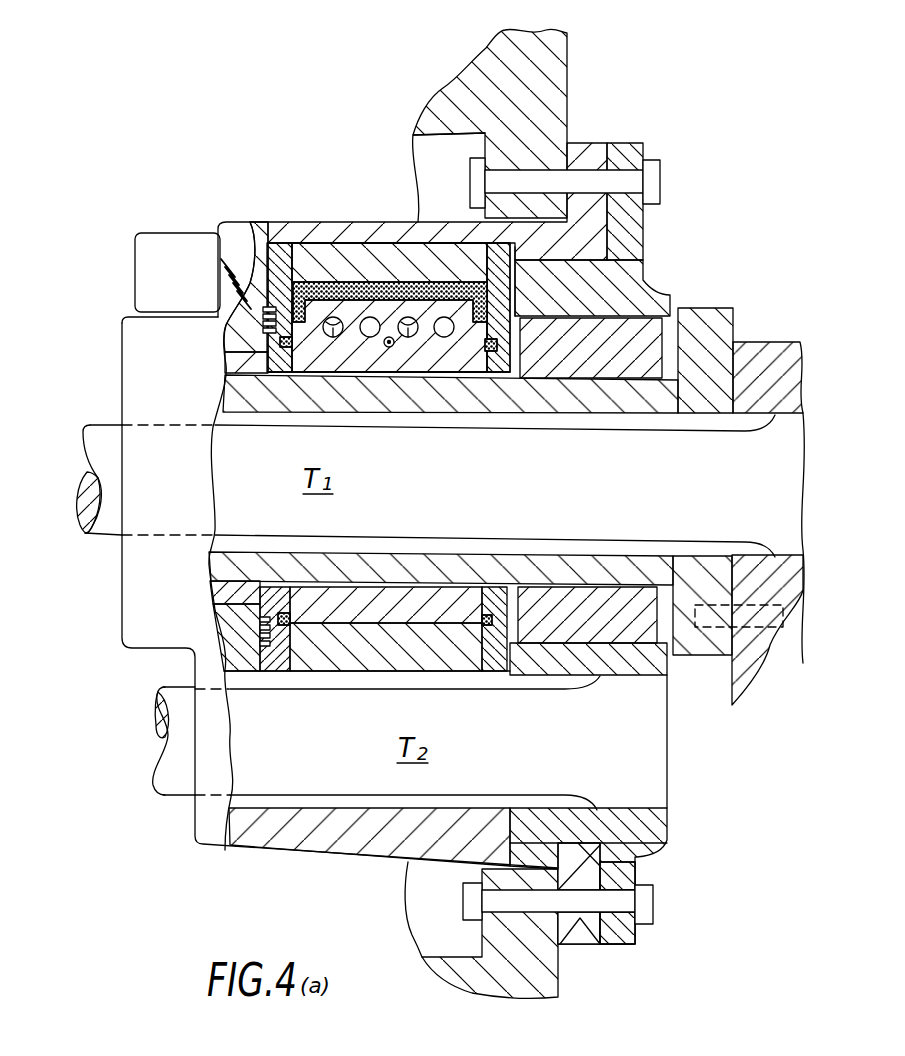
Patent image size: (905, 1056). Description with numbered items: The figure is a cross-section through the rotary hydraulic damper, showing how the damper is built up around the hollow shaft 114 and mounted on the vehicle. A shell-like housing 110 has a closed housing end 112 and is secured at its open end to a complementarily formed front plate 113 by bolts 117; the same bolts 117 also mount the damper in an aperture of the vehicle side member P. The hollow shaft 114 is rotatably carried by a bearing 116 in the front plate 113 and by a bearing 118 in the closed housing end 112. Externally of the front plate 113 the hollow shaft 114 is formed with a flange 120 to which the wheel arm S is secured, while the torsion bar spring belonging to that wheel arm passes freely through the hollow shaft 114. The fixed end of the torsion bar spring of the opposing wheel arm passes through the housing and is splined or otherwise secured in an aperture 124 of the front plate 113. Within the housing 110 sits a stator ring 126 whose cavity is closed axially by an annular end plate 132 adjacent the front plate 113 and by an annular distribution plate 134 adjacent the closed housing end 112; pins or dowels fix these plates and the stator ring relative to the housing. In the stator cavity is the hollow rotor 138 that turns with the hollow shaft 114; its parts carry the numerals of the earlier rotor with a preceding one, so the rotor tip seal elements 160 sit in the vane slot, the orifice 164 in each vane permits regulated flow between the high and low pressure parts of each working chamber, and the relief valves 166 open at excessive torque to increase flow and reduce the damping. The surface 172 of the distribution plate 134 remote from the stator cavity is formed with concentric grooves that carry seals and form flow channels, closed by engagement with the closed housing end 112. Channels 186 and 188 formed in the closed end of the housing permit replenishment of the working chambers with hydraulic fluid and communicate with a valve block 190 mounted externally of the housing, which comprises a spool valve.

The housing 110 is at (402, 226).
The closed housing end 112 is at (128, 362).
The front plate 113 is at (643, 248).
The hollow shaft 114 is at (535, 416).
The bearing 116 is at (645, 340).
The bolts 117 is at (663, 183).
The bearing 118 is at (222, 602).
The flange 120 is at (686, 658).
The aperture 124 is at (633, 808).
The stator ring 126 is at (348, 267).
The annular end plate 132 is at (493, 672).
The annular distribution plate 134 is at (272, 672).
The bearing block 138 is at (400, 598).
The seal elements 160 is at (433, 267).
The orifice 164 is at (389, 348).
The relief valves 166 is at (330, 338).
The surface of the distribution plate 172 is at (285, 252).
The channel 186 is at (250, 222).
The channel 188 is at (227, 320).
The valve block 190 is at (194, 289).
The vehicle side member P is at (570, 67).
The wheel arm S is at (767, 357).